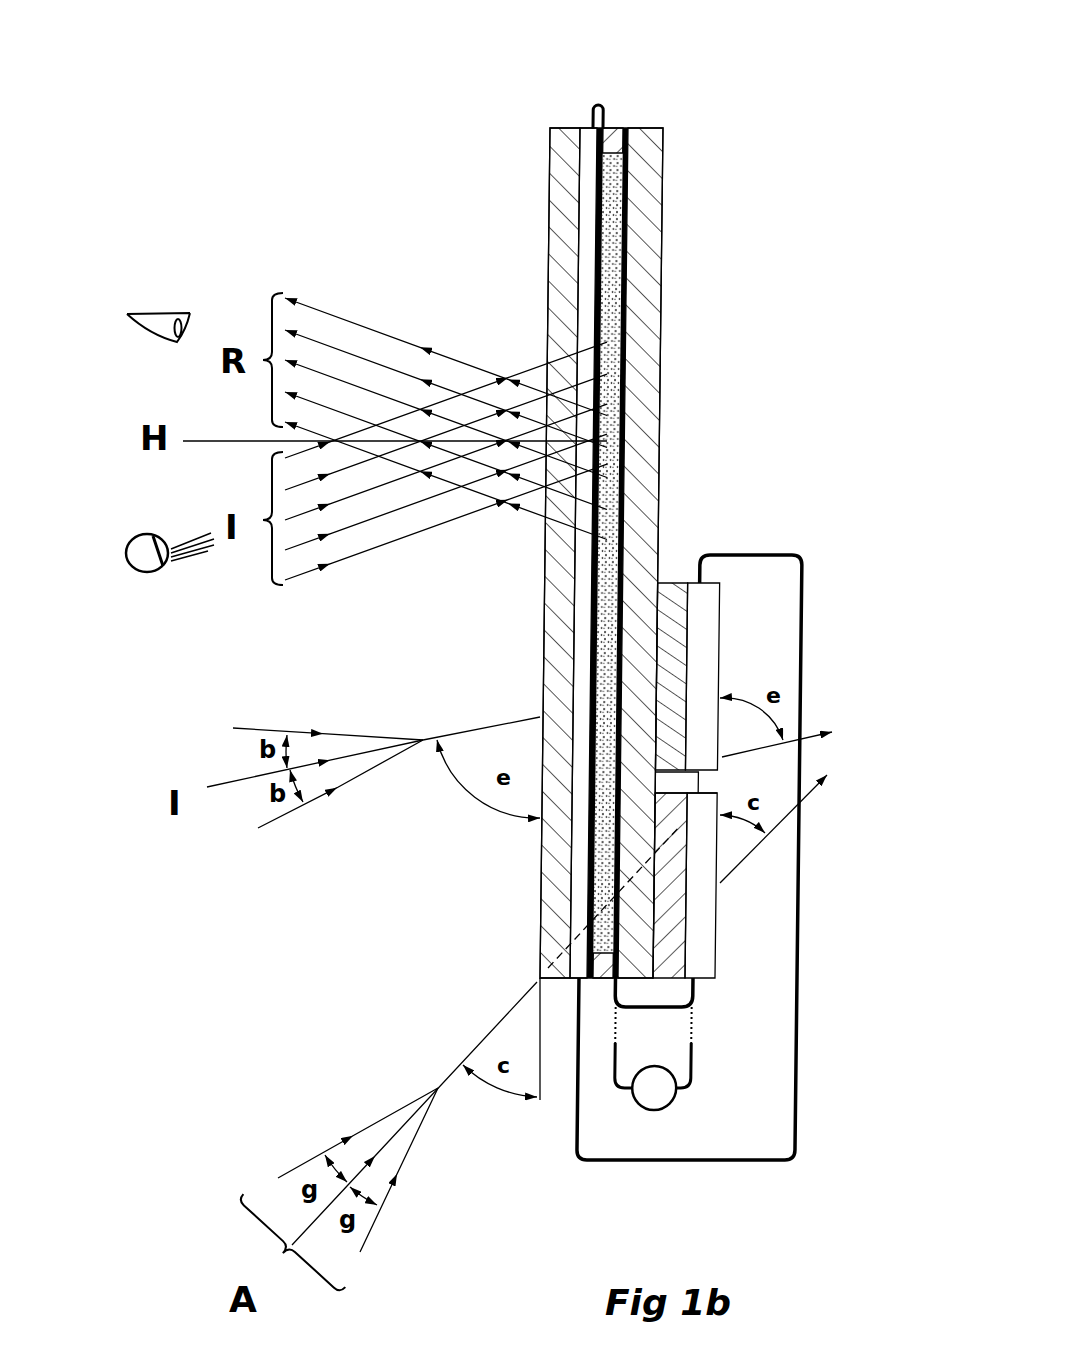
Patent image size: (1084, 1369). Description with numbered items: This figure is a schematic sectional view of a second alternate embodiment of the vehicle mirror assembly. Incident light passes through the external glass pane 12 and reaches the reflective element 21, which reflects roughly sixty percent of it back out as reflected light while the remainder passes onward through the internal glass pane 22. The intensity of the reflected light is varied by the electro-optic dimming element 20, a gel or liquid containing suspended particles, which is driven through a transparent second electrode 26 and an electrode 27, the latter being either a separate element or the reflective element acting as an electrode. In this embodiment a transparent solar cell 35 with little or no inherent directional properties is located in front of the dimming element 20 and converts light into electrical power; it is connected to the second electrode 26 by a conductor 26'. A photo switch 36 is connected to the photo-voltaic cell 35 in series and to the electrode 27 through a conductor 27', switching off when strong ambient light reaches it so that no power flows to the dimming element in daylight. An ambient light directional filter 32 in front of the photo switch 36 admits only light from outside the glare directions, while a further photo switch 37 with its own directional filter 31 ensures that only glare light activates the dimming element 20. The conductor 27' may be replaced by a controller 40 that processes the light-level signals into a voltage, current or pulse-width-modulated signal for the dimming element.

The external glass pane 12 is at (560, 268).
The electro-optic dimming element 20 is at (658, 489).
The reflective element 21 is at (600, 227).
The internal glass pane 22 is at (653, 188).
The second electrode 26 is at (531, 536).
The conductor 26' is at (533, 64).
The electrode 27 is at (697, 489).
The conductor 27' is at (747, 1003).
The directional filter 31 is at (668, 633).
The ambient light directional filter 32 is at (663, 895).
The photo-voltaic cell 35 is at (583, 610).
The photo switch 36 is at (700, 958).
The further photo switch 37 is at (702, 665).
The controller 40 is at (703, 1072).